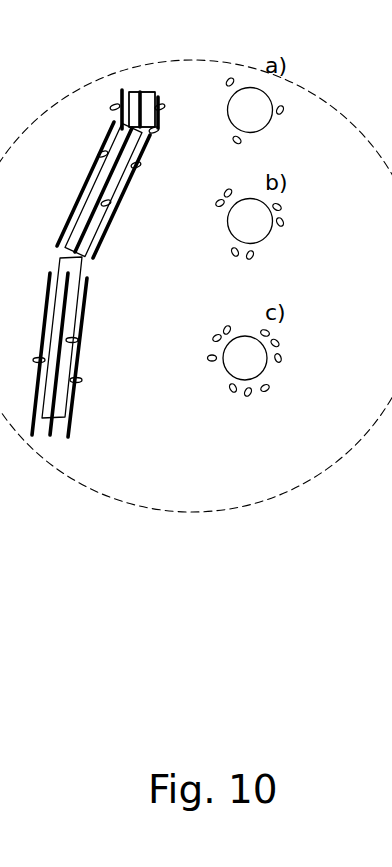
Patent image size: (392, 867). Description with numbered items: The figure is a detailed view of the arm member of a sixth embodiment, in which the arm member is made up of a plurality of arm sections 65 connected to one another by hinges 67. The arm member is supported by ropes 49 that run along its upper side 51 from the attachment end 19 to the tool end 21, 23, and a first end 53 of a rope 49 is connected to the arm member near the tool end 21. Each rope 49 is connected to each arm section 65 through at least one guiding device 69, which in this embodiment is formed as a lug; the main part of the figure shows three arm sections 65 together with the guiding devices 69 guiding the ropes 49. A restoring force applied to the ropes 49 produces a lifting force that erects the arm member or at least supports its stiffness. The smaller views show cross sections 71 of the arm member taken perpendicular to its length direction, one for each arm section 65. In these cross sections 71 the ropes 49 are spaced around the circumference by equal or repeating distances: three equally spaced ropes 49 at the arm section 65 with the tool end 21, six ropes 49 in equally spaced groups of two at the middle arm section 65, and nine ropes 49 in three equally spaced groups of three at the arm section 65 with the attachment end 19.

The attachment end 19 is at (72, 416).
The tool end 21 is at (147, 100).
The connector 23 is at (142, 109).
The rope 49 is at (103, 203).
The upper side 51 is at (96, 196).
The first end 53 is at (124, 92).
The arm section 65 is at (156, 113).
The hinge 67 is at (150, 136).
The guiding device 69 is at (115, 107).
The cross section 71 is at (258, 112).